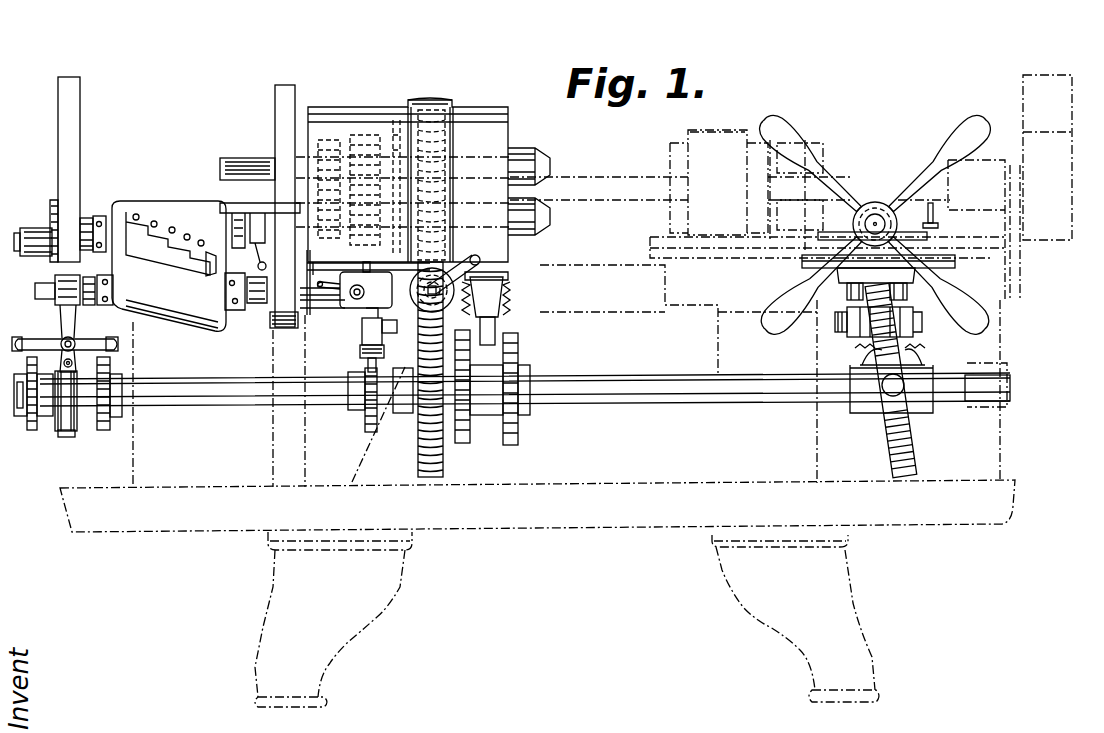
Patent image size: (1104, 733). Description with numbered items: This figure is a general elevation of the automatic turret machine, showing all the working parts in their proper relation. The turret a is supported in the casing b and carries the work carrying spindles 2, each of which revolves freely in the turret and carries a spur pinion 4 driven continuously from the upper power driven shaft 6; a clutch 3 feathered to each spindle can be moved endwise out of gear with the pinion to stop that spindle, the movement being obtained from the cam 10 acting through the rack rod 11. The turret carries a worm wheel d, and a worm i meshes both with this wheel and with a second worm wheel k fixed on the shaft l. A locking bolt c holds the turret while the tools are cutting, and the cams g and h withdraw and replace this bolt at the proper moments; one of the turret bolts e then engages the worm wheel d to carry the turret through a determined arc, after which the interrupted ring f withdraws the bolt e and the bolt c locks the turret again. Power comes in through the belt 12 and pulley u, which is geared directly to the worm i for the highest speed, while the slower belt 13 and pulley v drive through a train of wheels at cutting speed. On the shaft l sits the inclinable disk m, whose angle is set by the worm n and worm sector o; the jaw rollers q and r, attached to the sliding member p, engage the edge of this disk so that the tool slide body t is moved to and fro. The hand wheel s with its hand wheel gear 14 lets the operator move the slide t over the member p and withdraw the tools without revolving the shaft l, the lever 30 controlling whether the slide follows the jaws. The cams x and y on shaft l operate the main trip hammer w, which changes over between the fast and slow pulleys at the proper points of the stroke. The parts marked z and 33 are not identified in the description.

The slower moving belt 13 is at (80, 136).
The belt 12 is at (275, 112).
The spur pinion 4 is at (328, 140).
The clutch 3 is at (358, 136).
The turret bolt e is at (396, 120).
The interrupted ring f is at (410, 112).
The worm wheel d is at (437, 118).
The casing b is at (485, 108).
The turret a is at (508, 130).
The work carrying spindle 2 is at (550, 160).
The power driven shaft 6 is at (600, 182).
The tool slide body t is at (726, 136).
The hand wheel s is at (822, 180).
The hand wheel gear 14 is at (877, 212).
The lever 30 is at (933, 212).
The plate z is at (222, 210).
The belt driven pulley v is at (118, 192).
The main trip hammer w is at (74, 326).
The cam y is at (114, 350).
The pivot 33 is at (73, 366).
The cam x is at (45, 432).
The belt driven pulley u is at (302, 312).
The rack rod 11 is at (364, 330).
The cam 10 is at (366, 428).
The worm i is at (481, 262).
The cam g is at (462, 338).
The locking bolt c is at (500, 322).
The cam h is at (518, 340).
The second worm wheel k is at (440, 474).
The shaft l is at (166, 418).
The sliding member p is at (955, 262).
The jaw roller q is at (847, 294).
The jaw roller r is at (907, 290).
The worm n is at (908, 322).
The worm sector o is at (915, 365).
The inclinable disk m is at (908, 440).